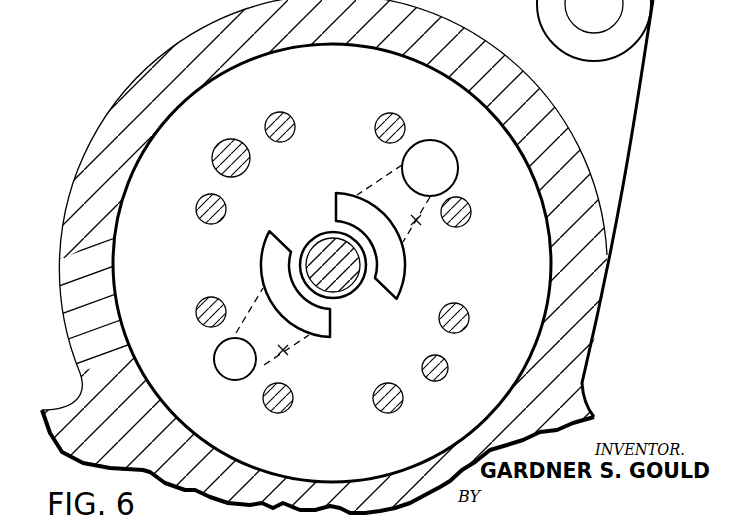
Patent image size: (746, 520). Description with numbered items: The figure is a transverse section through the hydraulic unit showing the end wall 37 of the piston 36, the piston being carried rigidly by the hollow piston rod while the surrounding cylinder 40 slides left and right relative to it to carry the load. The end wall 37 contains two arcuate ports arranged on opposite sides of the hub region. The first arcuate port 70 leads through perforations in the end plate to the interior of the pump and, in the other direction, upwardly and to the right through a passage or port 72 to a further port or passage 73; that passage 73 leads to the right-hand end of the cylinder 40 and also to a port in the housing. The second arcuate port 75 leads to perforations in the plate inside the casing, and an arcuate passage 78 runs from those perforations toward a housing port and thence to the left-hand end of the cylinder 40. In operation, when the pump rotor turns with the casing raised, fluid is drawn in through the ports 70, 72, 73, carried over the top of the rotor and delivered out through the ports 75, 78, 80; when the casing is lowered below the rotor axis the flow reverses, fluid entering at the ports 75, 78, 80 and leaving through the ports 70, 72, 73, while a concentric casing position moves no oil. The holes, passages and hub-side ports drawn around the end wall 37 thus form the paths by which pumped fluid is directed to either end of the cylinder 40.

The cylinder 40 is at (575, 141).
The piston 36 is at (531, 218).
The end wall 37 is at (506, 278).
The arcuate port 70 is at (393, 278).
The arcuate port 75 is at (323, 322).
The port or passage 73 is at (407, 168).
The port 80 is at (261, 357).
The passage or port 72 is at (416, 220).
The arcuate passage 78 is at (283, 350).